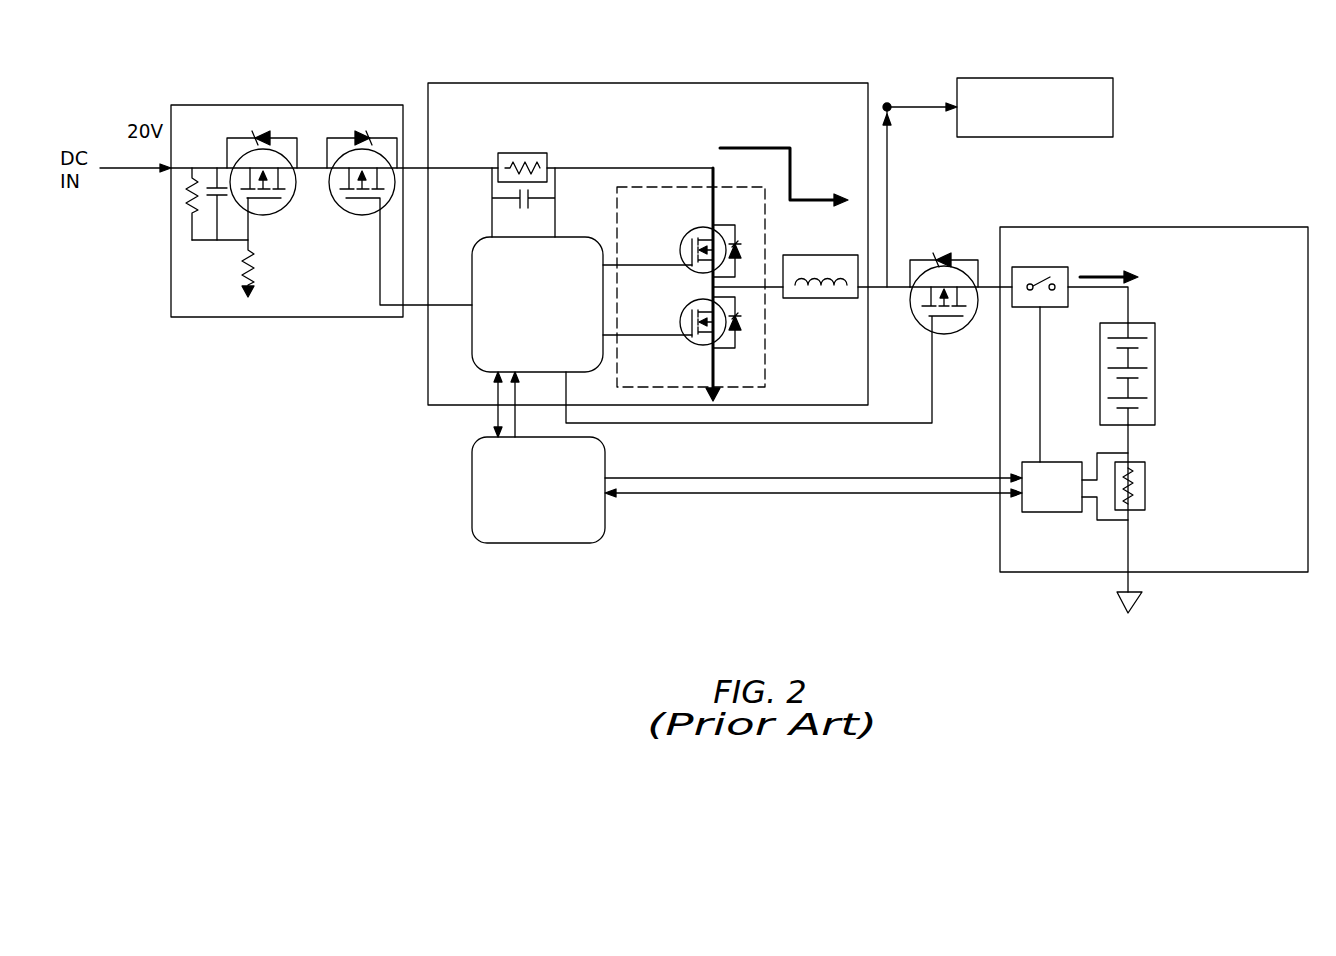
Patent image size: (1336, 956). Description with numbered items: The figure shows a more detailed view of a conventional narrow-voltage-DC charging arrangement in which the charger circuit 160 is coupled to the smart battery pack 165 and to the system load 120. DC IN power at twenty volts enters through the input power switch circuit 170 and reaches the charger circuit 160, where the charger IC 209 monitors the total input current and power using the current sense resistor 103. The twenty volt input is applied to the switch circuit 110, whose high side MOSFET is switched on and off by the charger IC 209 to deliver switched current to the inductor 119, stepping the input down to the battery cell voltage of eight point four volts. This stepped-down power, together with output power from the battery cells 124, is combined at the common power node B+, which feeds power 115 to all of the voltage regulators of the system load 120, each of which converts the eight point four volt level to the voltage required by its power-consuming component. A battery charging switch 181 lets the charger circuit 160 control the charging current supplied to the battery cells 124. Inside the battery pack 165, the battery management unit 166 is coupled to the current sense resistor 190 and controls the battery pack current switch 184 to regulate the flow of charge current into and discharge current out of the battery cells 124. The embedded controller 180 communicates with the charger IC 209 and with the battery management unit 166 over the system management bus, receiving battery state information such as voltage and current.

The input power switch circuit 170 is at (222, 105).
The charger circuit 160 is at (528, 83).
The current sense resistor 103 is at (521, 153).
The charger IC 209 is at (568, 237).
The switch circuit 110 is at (765, 352).
The inductor (choke) 119 is at (815, 255).
The power 115 is at (920, 105).
The system load 120 is at (1045, 78).
The smart battery pack 165 is at (1200, 227).
The battery charging switch 181 is at (955, 331).
The battery pack current switch 184 is at (1058, 307).
The battery cells 124 is at (1158, 415).
The battery management unit (BMU) 166 is at (1048, 462).
The current sense resistor 190 is at (1147, 473).
The embedded controller (EC) 180 is at (472, 515).